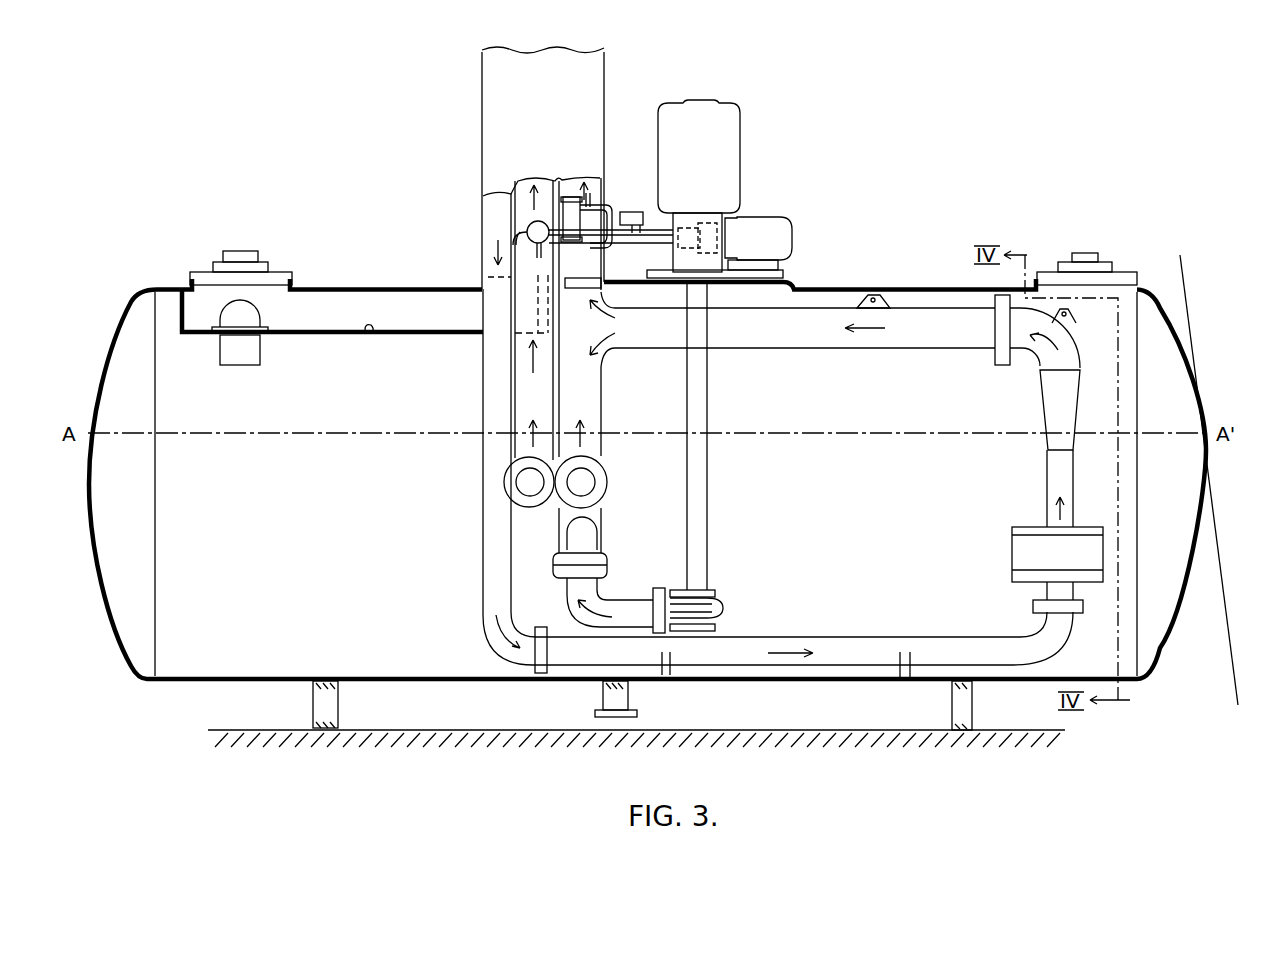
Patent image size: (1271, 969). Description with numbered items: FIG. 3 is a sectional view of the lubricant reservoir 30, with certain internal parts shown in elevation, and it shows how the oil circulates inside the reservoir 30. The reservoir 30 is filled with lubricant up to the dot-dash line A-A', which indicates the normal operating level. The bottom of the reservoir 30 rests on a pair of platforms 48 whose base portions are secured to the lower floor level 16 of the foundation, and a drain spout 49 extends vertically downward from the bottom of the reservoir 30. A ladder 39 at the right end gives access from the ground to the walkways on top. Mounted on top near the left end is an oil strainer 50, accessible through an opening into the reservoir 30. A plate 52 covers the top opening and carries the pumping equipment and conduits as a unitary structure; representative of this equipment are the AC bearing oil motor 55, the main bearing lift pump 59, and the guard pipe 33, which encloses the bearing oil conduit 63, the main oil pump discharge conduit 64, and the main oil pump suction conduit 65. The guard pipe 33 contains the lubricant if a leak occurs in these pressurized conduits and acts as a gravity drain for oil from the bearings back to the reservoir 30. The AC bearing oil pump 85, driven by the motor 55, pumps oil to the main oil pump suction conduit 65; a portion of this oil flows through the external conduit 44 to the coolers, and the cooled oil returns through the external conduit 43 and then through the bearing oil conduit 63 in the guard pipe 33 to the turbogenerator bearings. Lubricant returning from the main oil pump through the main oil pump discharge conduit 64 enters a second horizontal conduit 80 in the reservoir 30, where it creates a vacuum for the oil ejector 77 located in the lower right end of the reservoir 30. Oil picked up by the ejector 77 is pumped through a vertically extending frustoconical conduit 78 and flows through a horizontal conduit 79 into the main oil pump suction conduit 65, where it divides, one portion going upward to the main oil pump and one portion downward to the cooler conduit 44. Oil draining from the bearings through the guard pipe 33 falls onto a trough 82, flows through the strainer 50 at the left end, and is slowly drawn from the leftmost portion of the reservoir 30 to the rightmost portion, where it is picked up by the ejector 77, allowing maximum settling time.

The lower floor level 16 is at (940, 745).
The reservoir 30 is at (926, 287).
The guard pipe 33 is at (495, 98).
The ladder 39 is at (1196, 322).
The external conduit 43 is at (506, 486).
The external conduit 44 is at (607, 484).
The platform 48 is at (955, 705).
The drain spout 49 is at (620, 700).
The oil strainer 50 is at (252, 318).
The plate 52 is at (785, 278).
The AC bearing oil motor 55 is at (735, 138).
The main bearing lift pump 59 is at (786, 230).
The bearing oil conduit 63 is at (522, 380).
The main oil pump discharge conduit 64 is at (490, 401).
The main oil pump suction conduit 65 is at (595, 398).
The oil ejector 77 is at (1020, 548).
The frustoconical conduit 78 is at (1042, 401).
The horizontal conduit 79 is at (945, 345).
The second horizontal conduit 80 is at (845, 647).
The trough 82 is at (371, 331).
The AC bearing oil pump 85 is at (722, 602).